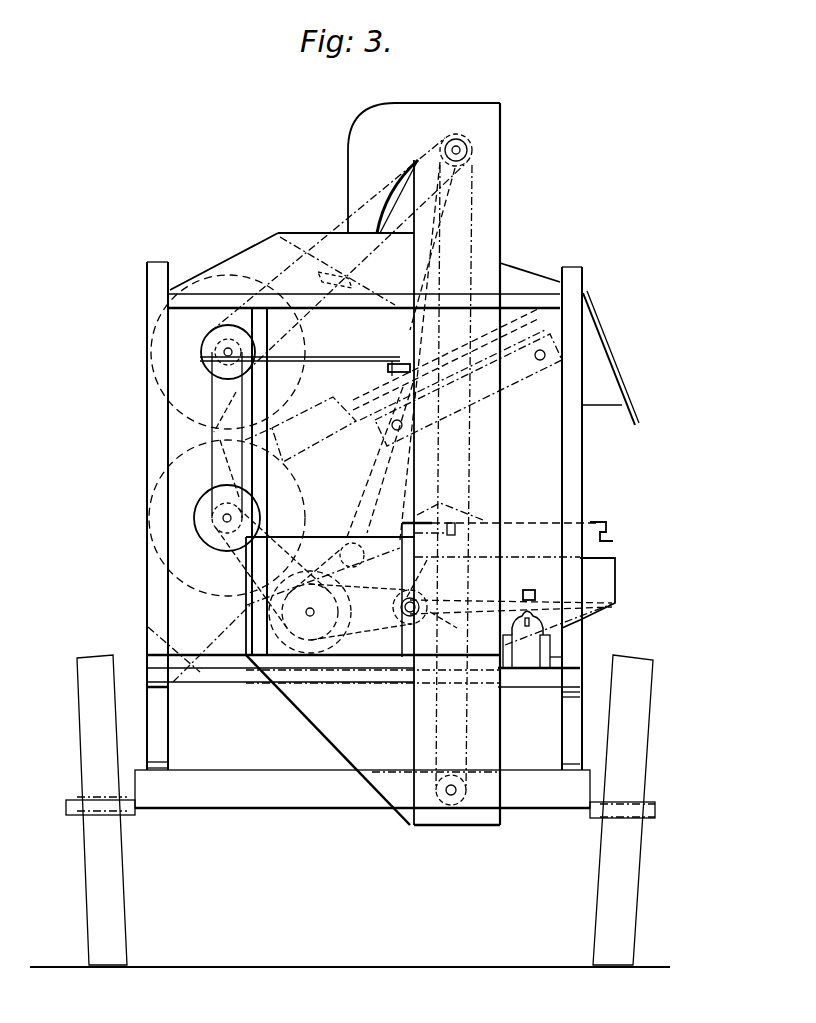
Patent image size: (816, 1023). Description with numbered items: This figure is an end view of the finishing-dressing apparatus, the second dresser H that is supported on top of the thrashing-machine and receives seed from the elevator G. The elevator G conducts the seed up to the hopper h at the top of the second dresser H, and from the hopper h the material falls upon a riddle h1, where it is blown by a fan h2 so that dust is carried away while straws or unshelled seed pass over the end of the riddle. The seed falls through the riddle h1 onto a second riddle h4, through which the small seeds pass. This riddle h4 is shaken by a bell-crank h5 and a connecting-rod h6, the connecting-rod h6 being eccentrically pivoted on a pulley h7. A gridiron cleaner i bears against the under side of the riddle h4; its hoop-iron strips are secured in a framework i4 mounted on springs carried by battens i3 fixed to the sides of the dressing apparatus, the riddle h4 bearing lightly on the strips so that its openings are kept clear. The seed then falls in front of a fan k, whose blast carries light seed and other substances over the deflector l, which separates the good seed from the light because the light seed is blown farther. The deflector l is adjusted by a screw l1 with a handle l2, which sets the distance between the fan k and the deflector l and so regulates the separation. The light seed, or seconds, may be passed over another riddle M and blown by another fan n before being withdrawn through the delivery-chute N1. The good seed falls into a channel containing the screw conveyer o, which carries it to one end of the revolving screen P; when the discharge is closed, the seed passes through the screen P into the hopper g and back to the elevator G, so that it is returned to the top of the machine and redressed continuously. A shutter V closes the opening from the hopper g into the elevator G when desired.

The hopper h is at (345, 233).
The riddle h1 is at (444, 346).
The fan h2 is at (211, 435).
The riddle h4 is at (449, 364).
The bell-crank h5 is at (400, 362).
The connecting-rod h6 is at (292, 357).
The pulley h7 is at (220, 350).
The gridiron cleaner i is at (301, 429).
The battens i3 is at (468, 390).
The framework i4 is at (544, 336).
The fan k is at (240, 535).
The hopper g is at (330, 667).
The screw conveyer o is at (350, 489).
The deflector l is at (414, 521).
The screw l1 is at (532, 523).
The handle l2 is at (605, 522).
The finishing or second dresser H is at (548, 518).
The elevator G is at (457, 464).
The shutter V is at (412, 792).
The revolving screen P is at (313, 614).
The fan n is at (418, 600).
The riddle M is at (511, 605).
The delivery-chute N1 is at (530, 662).